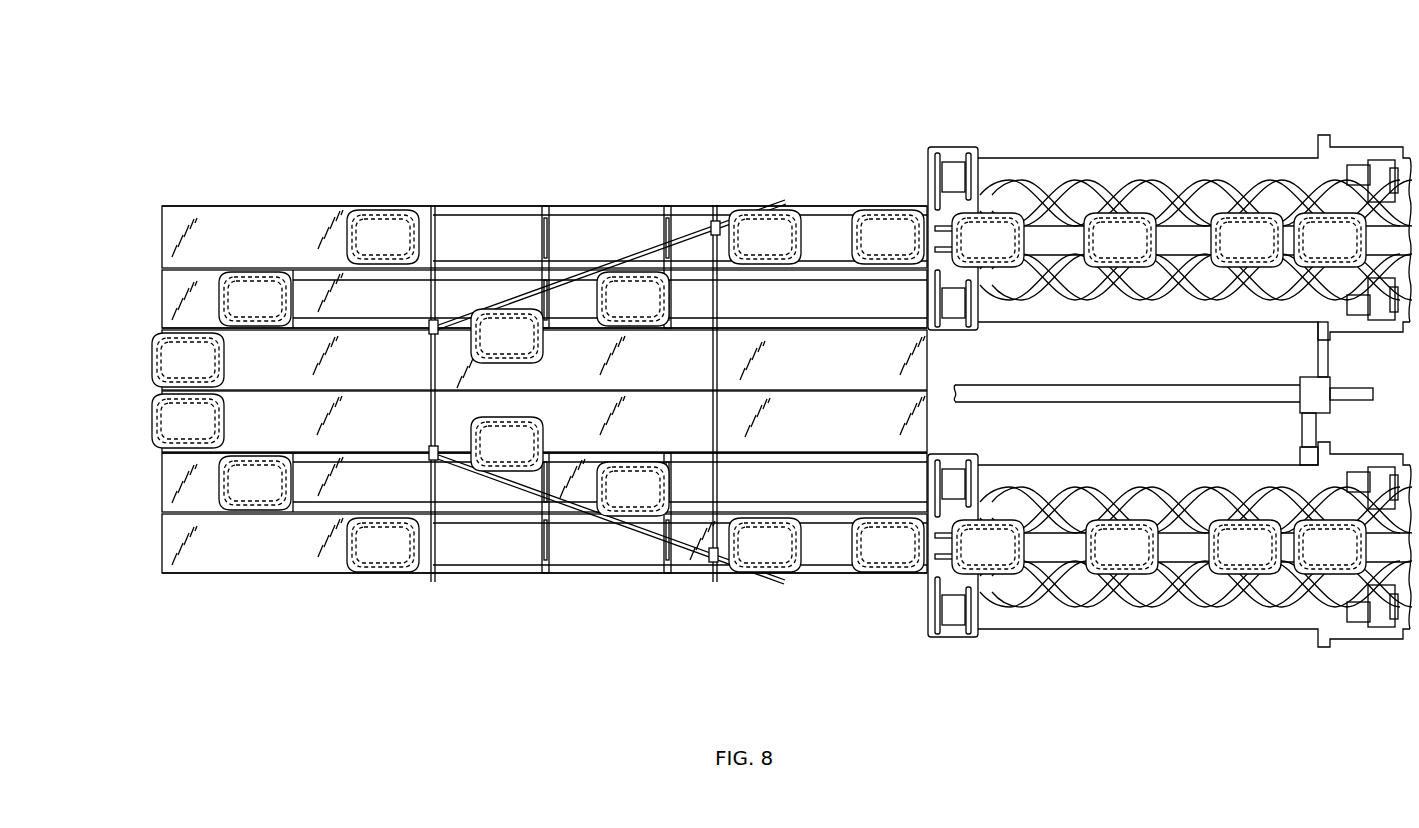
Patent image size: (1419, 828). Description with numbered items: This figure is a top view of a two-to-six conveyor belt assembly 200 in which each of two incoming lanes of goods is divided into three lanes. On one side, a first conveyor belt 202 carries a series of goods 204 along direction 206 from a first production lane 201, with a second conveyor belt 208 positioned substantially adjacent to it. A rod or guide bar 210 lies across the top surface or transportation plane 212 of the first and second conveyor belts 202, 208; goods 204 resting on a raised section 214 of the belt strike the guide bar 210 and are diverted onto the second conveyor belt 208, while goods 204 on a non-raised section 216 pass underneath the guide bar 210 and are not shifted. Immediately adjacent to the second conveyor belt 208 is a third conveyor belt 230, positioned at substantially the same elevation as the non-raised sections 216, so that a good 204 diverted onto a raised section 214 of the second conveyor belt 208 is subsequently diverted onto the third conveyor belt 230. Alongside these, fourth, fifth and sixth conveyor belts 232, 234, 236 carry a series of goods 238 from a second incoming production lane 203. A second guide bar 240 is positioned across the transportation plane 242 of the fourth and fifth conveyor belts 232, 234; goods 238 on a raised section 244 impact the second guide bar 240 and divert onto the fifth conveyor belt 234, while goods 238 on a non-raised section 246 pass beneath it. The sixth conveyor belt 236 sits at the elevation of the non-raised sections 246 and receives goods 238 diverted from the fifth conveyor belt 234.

The conveyor belt assembly 200 is at (645, 100).
The first production lane 201 is at (1192, 652).
The first conveyor belt 202 is at (518, 542).
The second incoming production lane 203 is at (1100, 137).
The goods 204 is at (760, 557).
The direction 206 is at (828, 157).
The second conveyor belt 208 is at (518, 481).
The guide bar 210 is at (657, 533).
The transportation plane 212 is at (566, 544).
The raised section 214 is at (610, 506).
The non-raised section 216 is at (565, 460).
The third conveyor belt 230 is at (518, 420).
The fourth conveyor belt 232 is at (518, 232).
The fifth conveyor belt 234 is at (518, 294).
The sixth conveyor belt 236 is at (518, 355).
The goods 238 is at (717, 298).
The second guide bar 240 is at (653, 243).
The transportation plane 242 is at (574, 238).
The raised section 244 is at (610, 277).
The non-raised section 246 is at (301, 212).